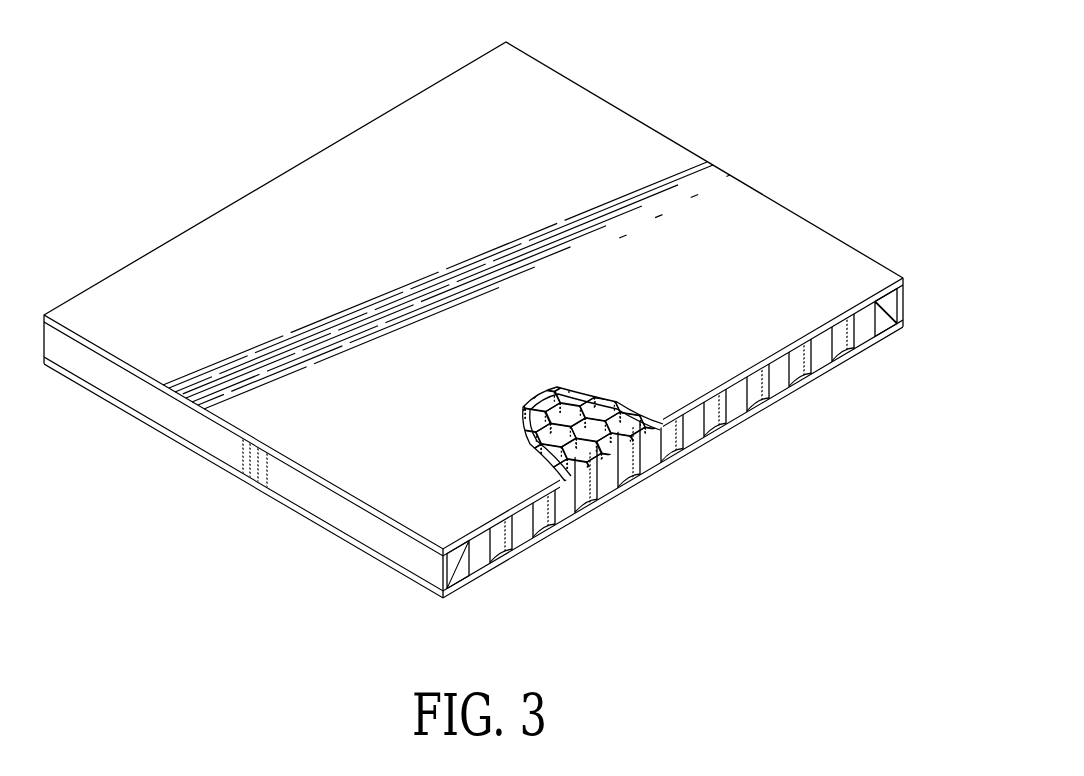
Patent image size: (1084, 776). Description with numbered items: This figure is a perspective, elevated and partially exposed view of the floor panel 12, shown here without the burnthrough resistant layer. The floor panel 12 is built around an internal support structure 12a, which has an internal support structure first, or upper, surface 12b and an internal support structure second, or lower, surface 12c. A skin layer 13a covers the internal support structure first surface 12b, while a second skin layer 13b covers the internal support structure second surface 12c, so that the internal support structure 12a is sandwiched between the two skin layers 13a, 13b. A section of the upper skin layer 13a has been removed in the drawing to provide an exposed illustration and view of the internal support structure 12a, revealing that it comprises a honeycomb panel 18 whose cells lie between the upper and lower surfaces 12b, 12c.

The floor panel 12 is at (700, 97).
The internal support structure 12a is at (800, 382).
The internal support structure first surface 12b is at (906, 296).
The internal support structure second surface 12c is at (540, 527).
The skin layer 13a is at (778, 233).
The skin layer 13b is at (375, 558).
The honeycomb panel 18 is at (597, 450).